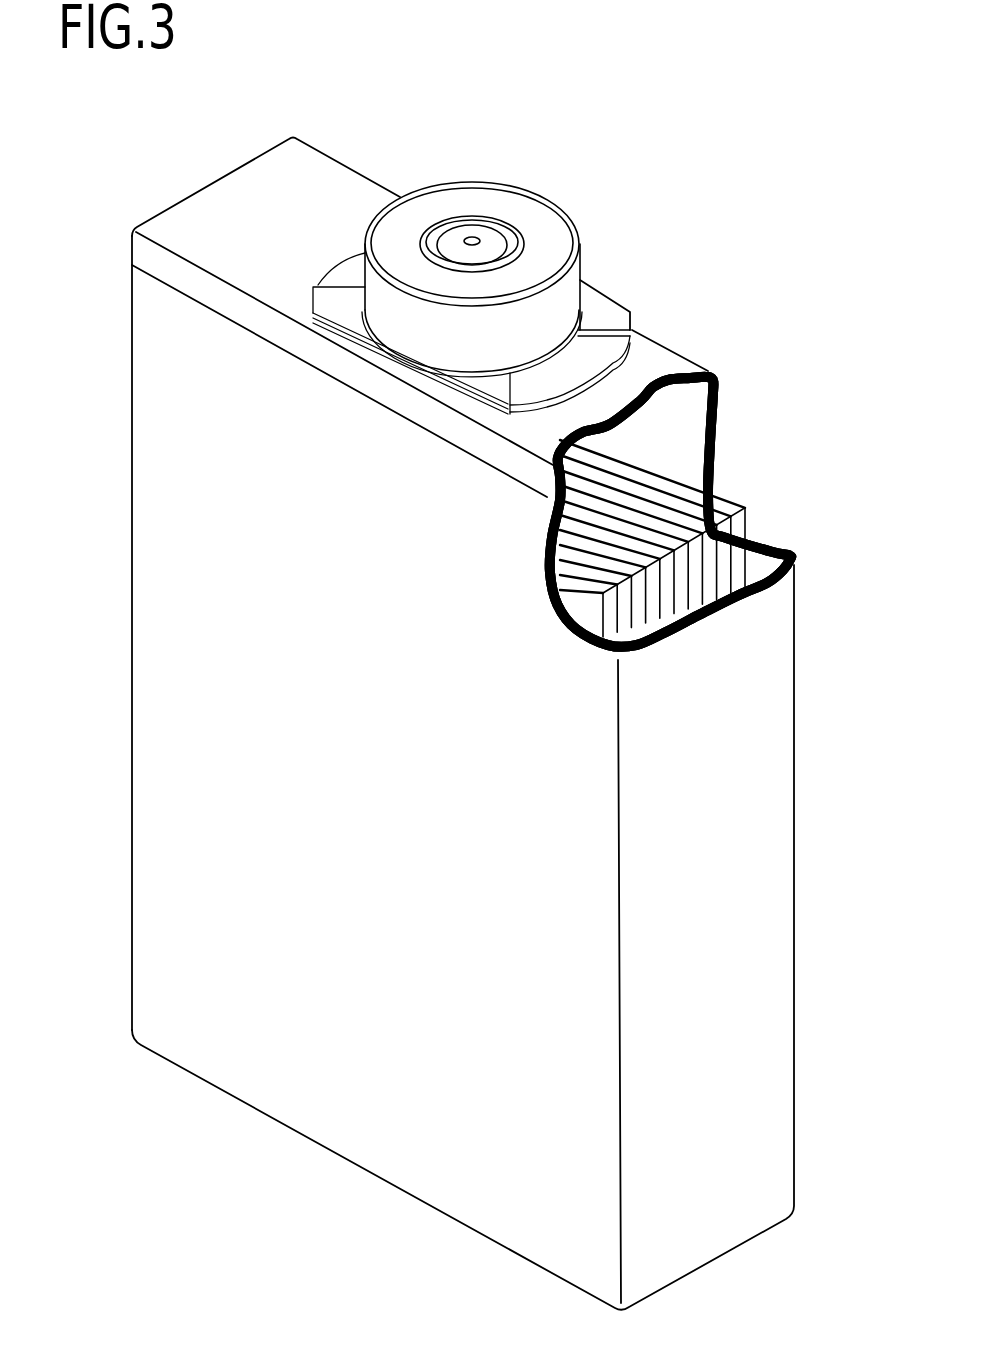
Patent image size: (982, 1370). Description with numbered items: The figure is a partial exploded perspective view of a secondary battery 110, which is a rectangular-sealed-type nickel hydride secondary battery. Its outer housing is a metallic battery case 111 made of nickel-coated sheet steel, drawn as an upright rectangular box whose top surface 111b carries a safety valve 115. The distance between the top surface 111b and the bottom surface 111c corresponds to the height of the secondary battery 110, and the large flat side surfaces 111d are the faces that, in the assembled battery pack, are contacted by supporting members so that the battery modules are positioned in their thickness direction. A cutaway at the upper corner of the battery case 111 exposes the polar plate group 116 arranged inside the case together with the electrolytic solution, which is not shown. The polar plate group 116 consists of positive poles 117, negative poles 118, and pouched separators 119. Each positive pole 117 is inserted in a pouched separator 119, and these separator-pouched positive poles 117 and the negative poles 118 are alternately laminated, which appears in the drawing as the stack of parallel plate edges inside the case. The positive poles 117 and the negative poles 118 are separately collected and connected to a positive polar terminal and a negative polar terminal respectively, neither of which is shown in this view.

The secondary battery 110 is at (400, 116).
The battery case 111 is at (168, 487).
The top surface 111b is at (207, 218).
The bottom surface 111c is at (336, 1152).
The side surface 111d is at (182, 748).
The safety valve 115 is at (493, 200).
The polar plate group 116 is at (655, 470).
The positive pole 117 is at (652, 447).
The negative pole 118 is at (665, 437).
The pouched separator 119 is at (693, 430).